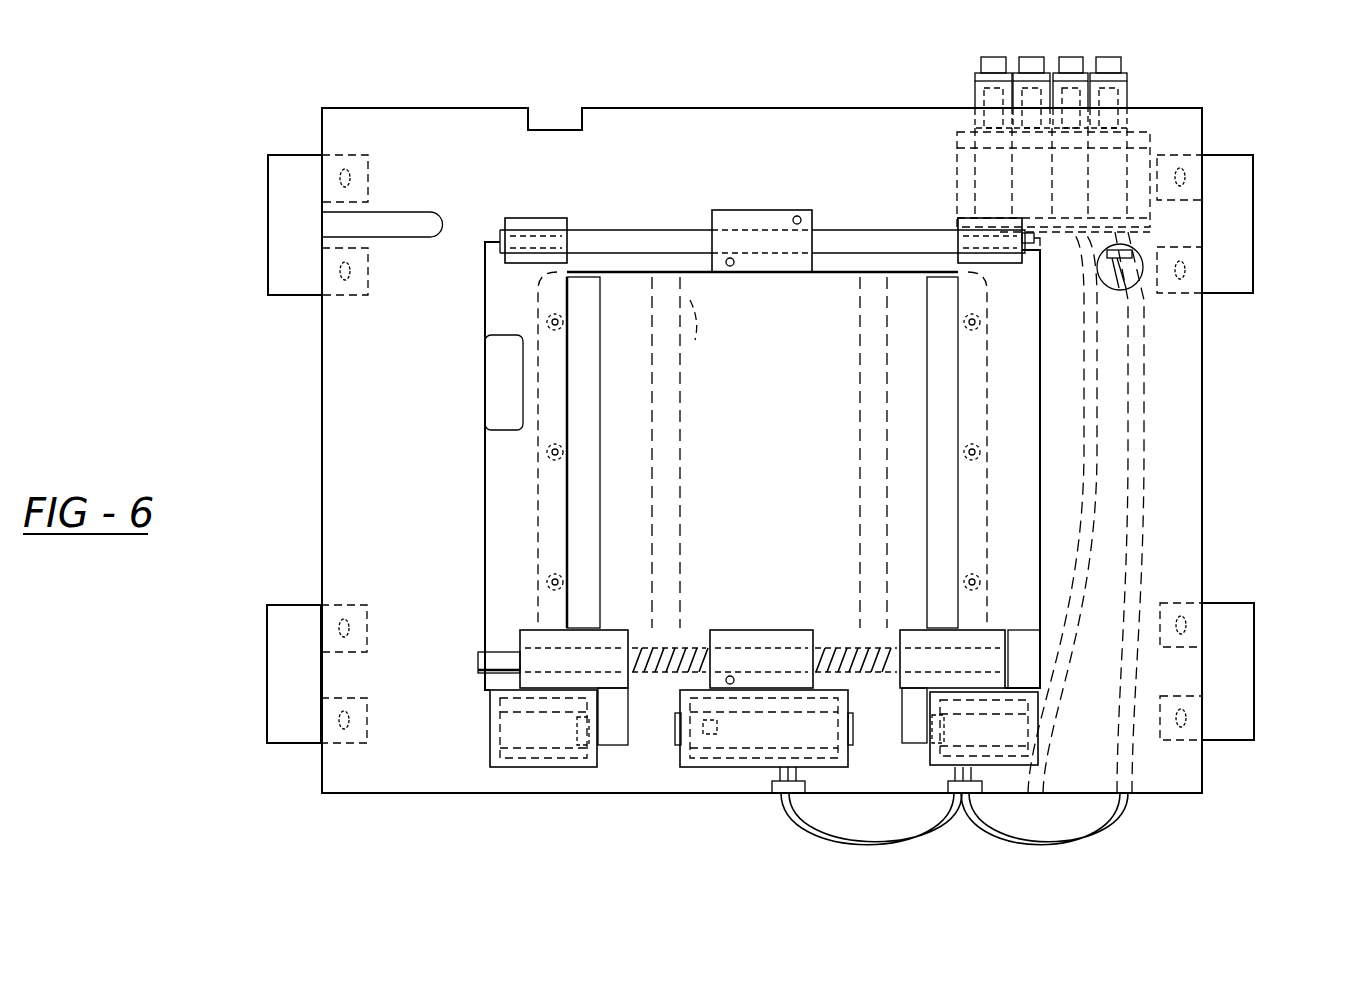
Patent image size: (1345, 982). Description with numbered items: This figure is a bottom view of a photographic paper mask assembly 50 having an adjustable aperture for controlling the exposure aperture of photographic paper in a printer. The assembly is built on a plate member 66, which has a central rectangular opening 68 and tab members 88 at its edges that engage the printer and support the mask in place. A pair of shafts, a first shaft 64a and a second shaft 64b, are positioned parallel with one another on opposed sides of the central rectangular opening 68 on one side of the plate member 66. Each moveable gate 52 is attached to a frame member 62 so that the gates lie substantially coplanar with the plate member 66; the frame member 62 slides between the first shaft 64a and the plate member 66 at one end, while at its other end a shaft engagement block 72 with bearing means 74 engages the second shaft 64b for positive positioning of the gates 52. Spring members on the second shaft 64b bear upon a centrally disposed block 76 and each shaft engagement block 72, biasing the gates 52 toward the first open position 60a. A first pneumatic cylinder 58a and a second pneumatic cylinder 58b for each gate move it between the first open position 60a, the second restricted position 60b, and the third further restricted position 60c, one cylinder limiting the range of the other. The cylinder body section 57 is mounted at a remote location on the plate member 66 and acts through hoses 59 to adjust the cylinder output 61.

The photographic paper mask assembly 50 is at (1194, 516).
The moveable gate 52 is at (942, 535).
The body section 57 is at (1112, 182).
The first pneumatic cylinder 58a is at (552, 730).
The second pneumatic cylinder 58b is at (717, 725).
The hoses 59 is at (1136, 382).
The first open position 60a is at (938, 287).
The second restricted position 60b is at (890, 270).
The third further restricted position 60c is at (690, 300).
The cylinder output 61 is at (913, 700).
The frame member 62 is at (1008, 487).
The first shaft 64a is at (625, 235).
The second shaft 64b is at (485, 652).
The plate member 66 is at (330, 383).
The central rectangular opening 68 is at (783, 313).
The shaft engagement block 72 is at (608, 698).
The bearing means 74 is at (542, 627).
The centrally disposed block 76 is at (765, 632).
The tab members 88 is at (278, 190).